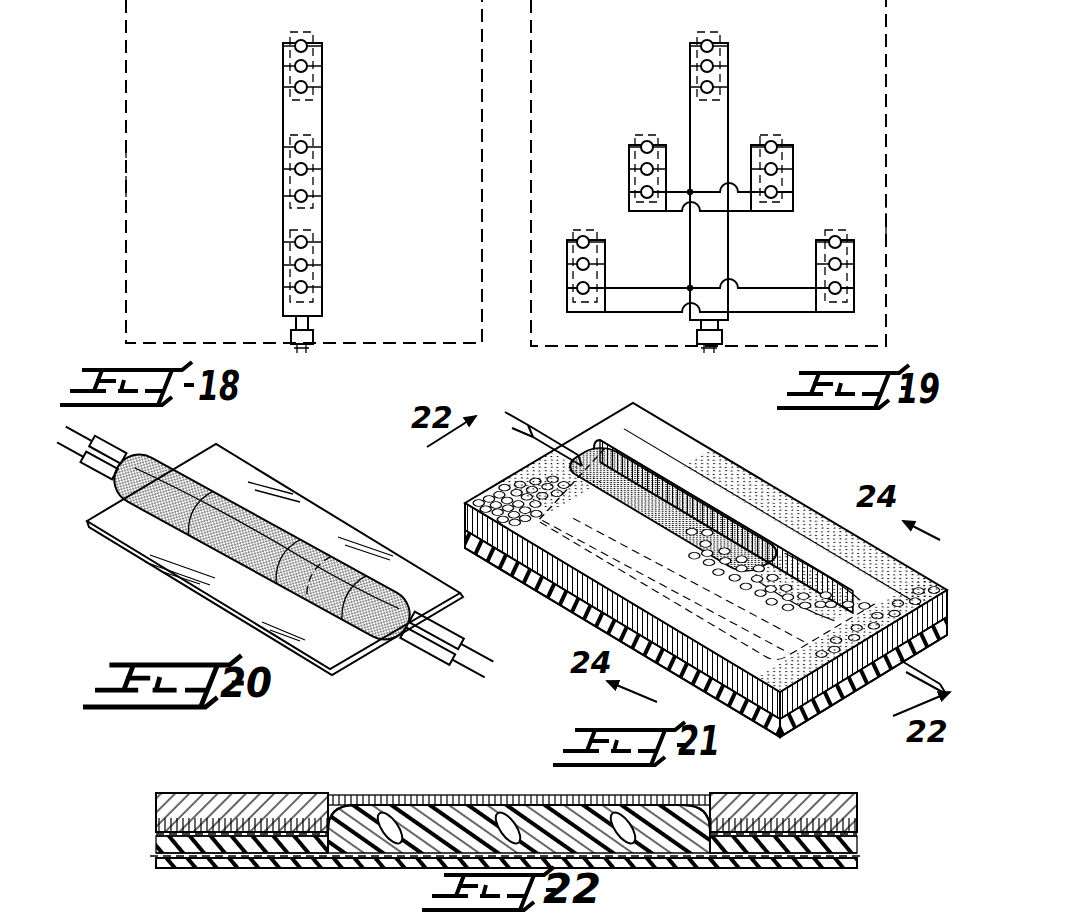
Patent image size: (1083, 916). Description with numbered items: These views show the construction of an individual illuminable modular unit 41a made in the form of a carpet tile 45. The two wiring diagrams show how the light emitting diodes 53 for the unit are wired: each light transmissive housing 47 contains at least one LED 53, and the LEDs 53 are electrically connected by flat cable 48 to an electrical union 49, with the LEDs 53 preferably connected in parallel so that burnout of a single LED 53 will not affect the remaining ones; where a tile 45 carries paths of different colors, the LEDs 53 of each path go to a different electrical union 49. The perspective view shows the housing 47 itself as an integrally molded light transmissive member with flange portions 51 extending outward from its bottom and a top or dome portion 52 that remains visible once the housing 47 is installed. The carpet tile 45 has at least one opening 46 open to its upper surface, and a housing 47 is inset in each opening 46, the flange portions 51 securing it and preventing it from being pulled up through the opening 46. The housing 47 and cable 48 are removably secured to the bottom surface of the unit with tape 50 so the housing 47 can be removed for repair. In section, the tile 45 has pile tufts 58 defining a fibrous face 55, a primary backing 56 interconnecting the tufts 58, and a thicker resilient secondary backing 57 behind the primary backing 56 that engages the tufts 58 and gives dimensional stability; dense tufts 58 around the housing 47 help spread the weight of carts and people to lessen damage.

In FIG. 18, the illuminable modular unit 41a is at (126, 180).
In FIG. 19, the illuminable modular unit 41a is at (890, 225).
In FIG. 18, the carpet tile 45 is at (122, 250).
In FIG. 19, the carpet tile 45 is at (890, 107).
In FIG. 21, the carpet tile 45 is at (665, 404).
In FIG. 22, the carpet tile 45 is at (503, 817).
In FIG. 21, the opening 46 is at (690, 447).
In FIG. 22, the opening 46 is at (344, 798).
In FIG. 18, the light transmissive housing 47 is at (283, 77).
In FIG. 19, the light transmissive housing 47 is at (690, 78).
In FIG. 20, the light transmissive housing 47 is at (222, 460).
In FIG. 21, the light transmissive housing 47 is at (722, 516).
In FIG. 22, the light transmissive housing 47 is at (528, 791).
In FIG. 20, the flat cable 48 is at (118, 480).
In FIG. 21, the flat cable 48 is at (548, 440).
In FIG. 22, the flat cable 48 is at (866, 856).
In FIG. 18, the electrical union 49 is at (314, 340).
In FIG. 19, the electrical union 49 is at (722, 340).
In FIG. 21, the tape 50 is at (832, 705).
In FIG. 22, the tape 50 is at (350, 868).
In FIG. 20, the flange portions 51 is at (290, 500).
In FIG. 21, the flange portions 51 is at (892, 556).
In FIG. 20, the dome portion 52 is at (356, 540).
In FIG. 21, the dome portion 52 is at (790, 496).
In FIG. 22, the dome portion 52 is at (656, 796).
In FIG. 18, the light emitting diode 53 is at (307, 90).
In FIG. 19, the light emitting diode 53 is at (713, 90).
In FIG. 20, the light emitting diode 53 is at (332, 526).
In FIG. 22, the light emitting diode 53 is at (498, 795).
In FIG. 21, the fibrous face 55 is at (506, 480).
In FIG. 22, the fibrous face 55 is at (196, 793).
In FIG. 21, the primary backing 56 is at (476, 506).
In FIG. 22, the primary backing 56 is at (156, 833).
In FIG. 21, the secondary backing 57 is at (478, 530).
In FIG. 22, the secondary backing 57 is at (156, 845).
In FIG. 21, the pile tufts 58 is at (726, 586).
In FIG. 22, the pile tufts 58 is at (248, 792).